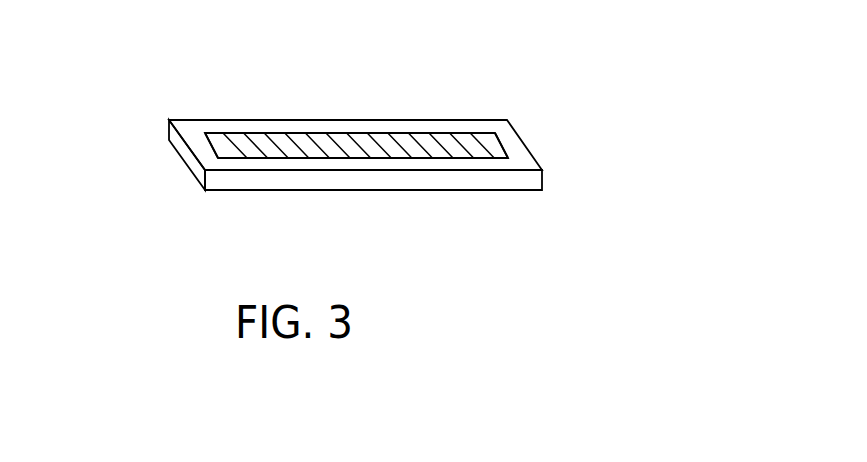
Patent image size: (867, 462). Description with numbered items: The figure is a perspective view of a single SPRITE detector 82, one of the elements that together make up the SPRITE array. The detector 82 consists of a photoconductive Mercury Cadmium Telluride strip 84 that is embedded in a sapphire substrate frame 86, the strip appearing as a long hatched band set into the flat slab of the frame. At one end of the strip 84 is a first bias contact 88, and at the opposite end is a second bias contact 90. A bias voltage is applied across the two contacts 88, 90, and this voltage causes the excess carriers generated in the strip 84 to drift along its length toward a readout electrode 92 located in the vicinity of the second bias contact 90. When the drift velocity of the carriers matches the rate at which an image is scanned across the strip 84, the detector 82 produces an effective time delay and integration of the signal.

The SPRITE detector 82 is at (490, 51).
The photoconductive Mercury Cadmium Telluride strip 84 is at (245, 147).
The sapphire substrate frame 86 is at (318, 164).
The first bias contact 88 is at (213, 146).
The second bias contact 90 is at (502, 144).
The readout electrode 92 is at (475, 158).